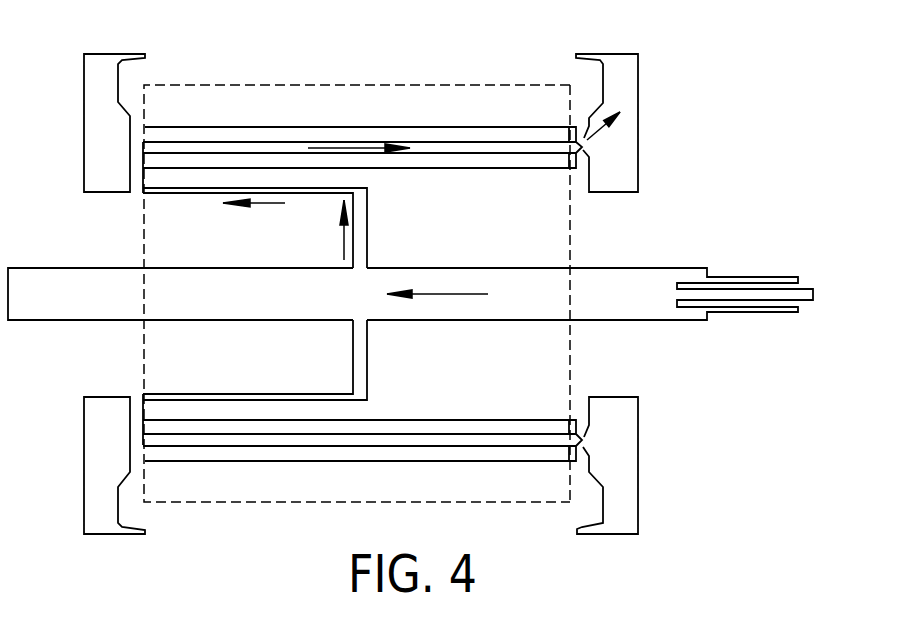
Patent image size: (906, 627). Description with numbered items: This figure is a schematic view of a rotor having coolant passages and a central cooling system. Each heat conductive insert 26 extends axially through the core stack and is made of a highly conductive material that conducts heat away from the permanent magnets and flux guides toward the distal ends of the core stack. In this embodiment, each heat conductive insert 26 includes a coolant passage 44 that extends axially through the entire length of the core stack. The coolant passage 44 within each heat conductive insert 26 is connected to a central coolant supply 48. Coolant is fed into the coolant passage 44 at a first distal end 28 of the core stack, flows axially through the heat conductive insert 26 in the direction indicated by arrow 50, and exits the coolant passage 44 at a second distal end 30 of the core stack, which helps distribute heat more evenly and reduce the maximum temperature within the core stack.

The heat conductive insert 26 is at (253, 134).
The first distal end 28 is at (143, 221).
The second distal end 30 is at (571, 220).
The coolant passage 44 is at (425, 148).
The central coolant supply 48 is at (633, 305).
The arrow 50 is at (349, 147).